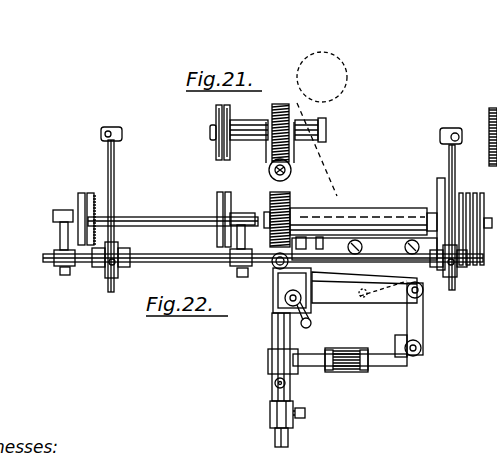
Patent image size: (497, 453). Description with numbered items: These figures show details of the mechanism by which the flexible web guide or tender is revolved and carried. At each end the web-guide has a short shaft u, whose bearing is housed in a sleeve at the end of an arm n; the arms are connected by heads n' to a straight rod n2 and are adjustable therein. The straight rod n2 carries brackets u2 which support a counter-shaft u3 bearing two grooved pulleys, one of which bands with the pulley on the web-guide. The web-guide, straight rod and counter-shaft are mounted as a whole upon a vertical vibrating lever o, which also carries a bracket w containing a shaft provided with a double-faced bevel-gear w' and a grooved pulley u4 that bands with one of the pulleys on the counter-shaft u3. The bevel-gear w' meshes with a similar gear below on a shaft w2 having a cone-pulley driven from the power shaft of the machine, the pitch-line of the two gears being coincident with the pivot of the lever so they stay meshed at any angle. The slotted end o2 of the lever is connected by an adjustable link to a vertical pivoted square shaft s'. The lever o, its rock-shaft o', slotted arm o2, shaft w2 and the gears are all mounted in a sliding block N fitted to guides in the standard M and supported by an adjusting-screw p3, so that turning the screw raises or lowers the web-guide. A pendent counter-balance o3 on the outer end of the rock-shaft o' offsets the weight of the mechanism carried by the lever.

In FIG. 22, the arm n is at (284, 209).
In FIG. 22, the head n' is at (283, 260).
In FIG. 22, the straight rod n2 is at (263, 251).
In FIG. 22, the short shaft u is at (491, 128).
In FIG. 22, the bracket u2 is at (155, 234).
In FIG. 22, the counter-shaft u3 is at (173, 214).
In FIG. 21, the grooved pulley u4 is at (214, 132).
In FIG. 21, the bracket w is at (278, 149).
In FIG. 21, the double-faced bevel-gear w' is at (282, 127).
In FIG. 22, the shaft w2 is at (433, 212).
In FIG. 22, the sliding block N is at (292, 290).
In FIG. 22, the standard M is at (364, 288).
In FIG. 22, the vertical vibrating lever o is at (271, 336).
In FIG. 22, the rock-shaft or pivot o' is at (293, 438).
In FIG. 22, the slotted end o2 is at (289, 364).
In FIG. 22, the pendent counter-balance o3 is at (311, 399).
In FIG. 22, the adjusting-screw p3 is at (284, 300).
In FIG. 22, the vertical pivoted square shaft s' is at (412, 329).